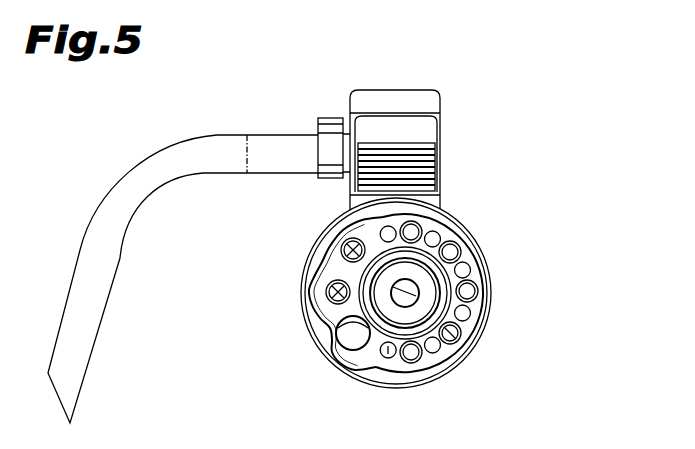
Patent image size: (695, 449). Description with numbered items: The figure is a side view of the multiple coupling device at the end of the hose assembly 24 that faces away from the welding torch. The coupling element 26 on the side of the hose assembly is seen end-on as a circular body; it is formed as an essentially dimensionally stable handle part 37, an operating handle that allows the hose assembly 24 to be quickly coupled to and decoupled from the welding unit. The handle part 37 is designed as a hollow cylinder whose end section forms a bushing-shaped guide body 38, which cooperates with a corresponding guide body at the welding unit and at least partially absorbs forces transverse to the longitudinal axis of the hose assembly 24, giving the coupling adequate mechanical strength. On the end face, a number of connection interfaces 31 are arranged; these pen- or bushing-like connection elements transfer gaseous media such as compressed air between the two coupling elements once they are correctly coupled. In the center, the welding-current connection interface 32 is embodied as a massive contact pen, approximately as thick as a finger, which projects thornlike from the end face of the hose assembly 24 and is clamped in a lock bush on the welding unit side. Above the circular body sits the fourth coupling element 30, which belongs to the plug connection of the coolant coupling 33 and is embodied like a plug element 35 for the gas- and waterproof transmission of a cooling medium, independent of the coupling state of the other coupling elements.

The hose assembly 24 is at (543, 118).
The coupling element on the side of the hose assembly 26 is at (498, 267).
The fourth coupling element 30 is at (443, 93).
The connection interface 31 is at (467, 312).
The welding-current connection interface 32 is at (395, 297).
The coolant coupling 33 is at (312, 108).
The plug element 35 is at (383, 100).
The handle part 37 is at (307, 257).
The guide body 38 is at (298, 302).